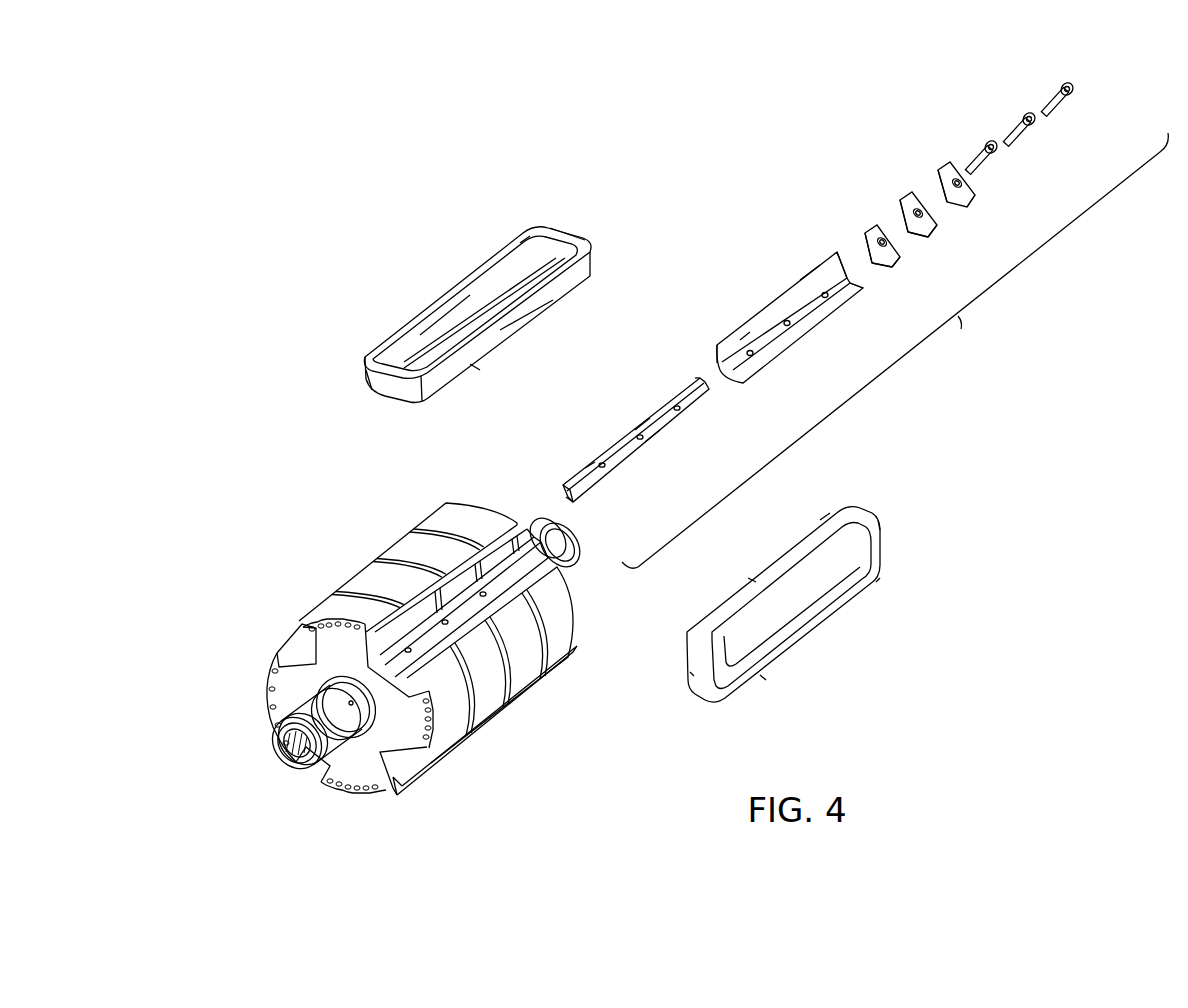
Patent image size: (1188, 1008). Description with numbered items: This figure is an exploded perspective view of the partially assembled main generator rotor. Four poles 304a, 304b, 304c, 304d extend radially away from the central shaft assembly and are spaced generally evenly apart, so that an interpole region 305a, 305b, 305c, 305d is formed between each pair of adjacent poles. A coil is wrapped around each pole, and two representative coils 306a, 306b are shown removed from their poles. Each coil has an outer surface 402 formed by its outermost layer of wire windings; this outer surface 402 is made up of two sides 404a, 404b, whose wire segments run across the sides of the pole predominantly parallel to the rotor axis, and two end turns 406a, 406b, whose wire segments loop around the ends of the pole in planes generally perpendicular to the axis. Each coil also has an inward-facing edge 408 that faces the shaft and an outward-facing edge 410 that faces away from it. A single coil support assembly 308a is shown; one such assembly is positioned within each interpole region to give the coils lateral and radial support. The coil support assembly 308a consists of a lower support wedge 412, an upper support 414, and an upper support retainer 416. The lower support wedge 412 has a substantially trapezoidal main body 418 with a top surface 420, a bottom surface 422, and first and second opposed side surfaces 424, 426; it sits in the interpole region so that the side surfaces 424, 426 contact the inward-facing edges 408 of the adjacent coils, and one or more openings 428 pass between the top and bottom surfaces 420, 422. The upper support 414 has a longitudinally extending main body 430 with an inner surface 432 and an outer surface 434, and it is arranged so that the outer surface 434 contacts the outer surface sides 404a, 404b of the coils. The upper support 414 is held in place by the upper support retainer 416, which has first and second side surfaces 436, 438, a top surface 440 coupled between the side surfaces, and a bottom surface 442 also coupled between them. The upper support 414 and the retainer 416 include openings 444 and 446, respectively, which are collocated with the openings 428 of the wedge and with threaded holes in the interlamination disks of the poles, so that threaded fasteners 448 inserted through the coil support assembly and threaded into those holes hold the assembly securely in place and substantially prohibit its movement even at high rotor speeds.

The pole 304a is at (365, 577).
The pole 304b is at (520, 684).
The pole 304c is at (430, 783).
The pole 304d is at (266, 693).
The interpole region 305a is at (502, 555).
The interpole region 305b is at (457, 748).
The interpole region 305c is at (318, 770).
The interpole region 305d is at (277, 632).
The coil 306a is at (384, 304).
The coil 306b is at (822, 642).
The coil support assembly 308a is at (895, 350).
The outer surface 402 is at (596, 262).
The outer surface side 404a is at (467, 292).
The outer surface side 404b is at (553, 302).
The end turn 406a is at (367, 378).
The end turn 406b is at (560, 232).
The inward-facing edge 408 is at (473, 364).
The outward-facing edge 410 is at (521, 244).
The lower support wedge 412 is at (580, 472).
The upper support 414 is at (775, 298).
The upper support retainer 416 is at (938, 165).
The main body 418 is at (697, 378).
The top surface 420 is at (590, 468).
The bottom surface 422 is at (565, 498).
The first side surface 424 is at (642, 423).
The second side surface 426 is at (652, 438).
The opening 428 is at (675, 407).
The main body 430 is at (812, 272).
The inner surface 432 is at (743, 336).
The outer surface 434 is at (716, 346).
The first side surface 436 is at (845, 275).
The second side surface 438 is at (890, 268).
The top surface 440 is at (930, 234).
The bottom surface 442 is at (863, 289).
The opening 444 is at (752, 356).
The opening 446 is at (902, 258).
The screw 448 is at (990, 158).